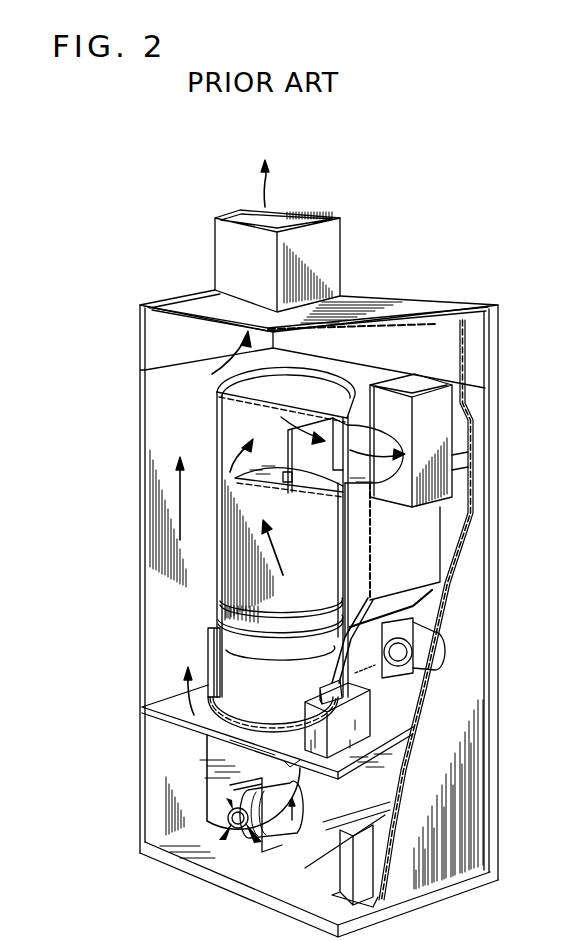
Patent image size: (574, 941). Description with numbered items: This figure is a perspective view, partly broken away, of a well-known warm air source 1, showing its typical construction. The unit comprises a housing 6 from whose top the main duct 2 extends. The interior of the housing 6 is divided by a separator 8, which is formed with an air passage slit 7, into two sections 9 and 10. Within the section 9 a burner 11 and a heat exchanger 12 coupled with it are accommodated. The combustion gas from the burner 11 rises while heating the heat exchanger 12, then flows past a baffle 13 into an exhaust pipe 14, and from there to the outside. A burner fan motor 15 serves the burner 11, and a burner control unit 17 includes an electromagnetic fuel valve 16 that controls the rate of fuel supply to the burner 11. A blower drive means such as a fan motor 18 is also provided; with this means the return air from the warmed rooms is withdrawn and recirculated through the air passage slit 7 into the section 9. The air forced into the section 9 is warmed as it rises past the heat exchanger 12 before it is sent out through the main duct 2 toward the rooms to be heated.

The warm air source 1 is at (498, 580).
The main duct 2 is at (341, 262).
The housing 6 is at (467, 662).
The air passage slit 7 is at (241, 734).
The separator 8 is at (177, 705).
The section 9 is at (162, 568).
The section 10 is at (157, 807).
The burner 11 is at (211, 641).
The heat exchanger 12 is at (217, 396).
The baffle 13 is at (298, 441).
The exhaust pipe 14 is at (465, 435).
The burner fan motor 15 is at (430, 637).
The electromagnetic fuel valve 16 is at (368, 686).
The burner control unit 17 is at (411, 733).
The fan motor 18 is at (227, 870).